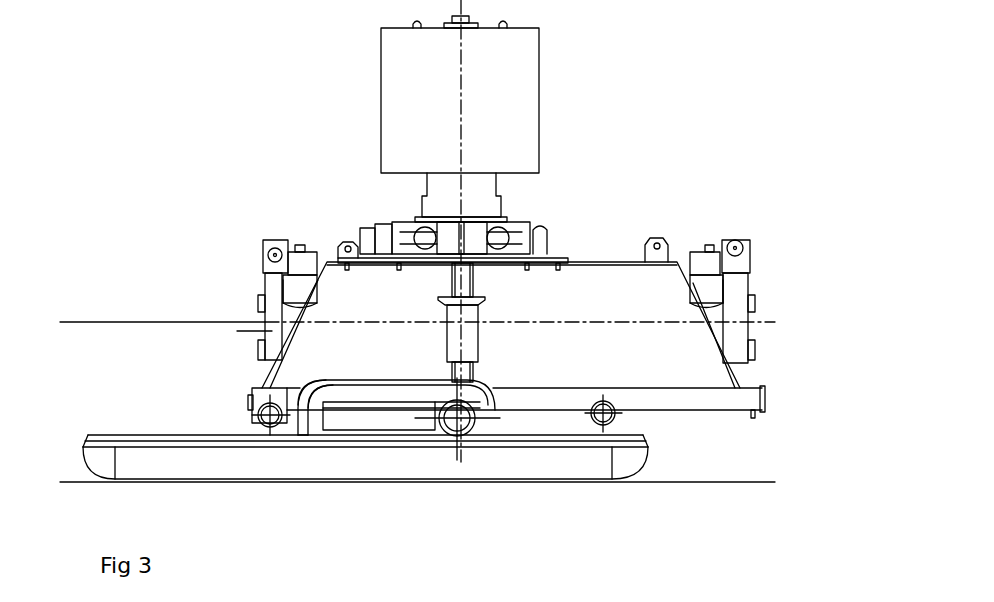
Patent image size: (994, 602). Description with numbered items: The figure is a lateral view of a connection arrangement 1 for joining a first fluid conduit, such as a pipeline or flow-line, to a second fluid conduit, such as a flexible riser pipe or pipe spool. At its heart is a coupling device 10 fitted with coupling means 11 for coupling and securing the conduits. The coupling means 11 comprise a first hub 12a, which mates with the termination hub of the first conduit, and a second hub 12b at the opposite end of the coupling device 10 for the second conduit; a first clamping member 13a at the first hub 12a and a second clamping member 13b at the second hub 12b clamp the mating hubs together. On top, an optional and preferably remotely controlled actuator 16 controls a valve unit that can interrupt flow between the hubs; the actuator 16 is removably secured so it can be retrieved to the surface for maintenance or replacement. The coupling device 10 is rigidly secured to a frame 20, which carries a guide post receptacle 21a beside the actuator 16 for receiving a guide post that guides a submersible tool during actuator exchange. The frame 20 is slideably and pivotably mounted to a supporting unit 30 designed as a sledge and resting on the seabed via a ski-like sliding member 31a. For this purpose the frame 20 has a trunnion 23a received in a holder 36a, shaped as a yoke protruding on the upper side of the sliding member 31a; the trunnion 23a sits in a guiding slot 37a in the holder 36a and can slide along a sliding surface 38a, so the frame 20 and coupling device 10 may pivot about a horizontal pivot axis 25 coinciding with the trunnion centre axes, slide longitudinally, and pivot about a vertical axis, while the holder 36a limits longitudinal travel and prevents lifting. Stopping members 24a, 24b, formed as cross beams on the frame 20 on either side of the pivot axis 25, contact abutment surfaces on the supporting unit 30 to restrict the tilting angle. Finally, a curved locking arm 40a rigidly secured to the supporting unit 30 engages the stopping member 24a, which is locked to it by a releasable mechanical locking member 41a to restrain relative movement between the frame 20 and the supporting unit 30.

The connection arrangement 1 is at (632, 142).
The coupling device 10 is at (326, 257).
The coupling means 11 is at (277, 238).
The first hub 12a is at (260, 336).
The second hub 12b is at (755, 319).
The first clamping member 13a is at (283, 286).
The second clamping member 13b is at (742, 276).
The actuator 16 is at (540, 90).
The frame 20 is at (600, 272).
The guide post receptacle 21a is at (473, 343).
The trunnion 23a is at (448, 433).
The stopping member 24a is at (257, 420).
The stopping member 24b is at (615, 418).
The horizontal pivot axis 25 is at (468, 427).
The supporting unit 30 is at (365, 451).
The sliding member 31a is at (588, 467).
The holder 36a is at (386, 390).
The guiding slot 37a is at (337, 425).
The sliding surface 38a is at (370, 423).
The locking arm 40a is at (288, 400).
The locking member 41a is at (262, 432).